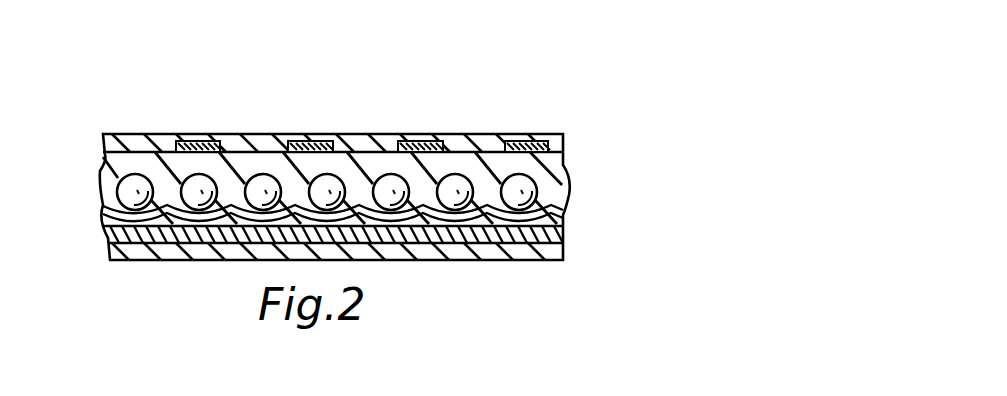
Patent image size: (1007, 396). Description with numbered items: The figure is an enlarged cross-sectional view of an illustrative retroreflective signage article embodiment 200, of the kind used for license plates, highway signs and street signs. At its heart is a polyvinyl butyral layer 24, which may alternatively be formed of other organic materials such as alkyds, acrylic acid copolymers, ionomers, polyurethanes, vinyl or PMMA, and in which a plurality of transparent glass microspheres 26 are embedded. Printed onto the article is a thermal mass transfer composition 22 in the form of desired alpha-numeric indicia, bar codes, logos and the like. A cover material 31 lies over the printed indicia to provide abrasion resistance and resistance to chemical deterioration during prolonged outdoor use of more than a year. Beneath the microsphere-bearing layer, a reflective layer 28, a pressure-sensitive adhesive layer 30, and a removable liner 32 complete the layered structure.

The retroreflective signage article embodiment 200 is at (533, 113).
The thermal mass transfer composition 22 is at (417, 136).
The polyvinyl butyral layer 24 is at (552, 167).
The transparent glass microspheres 26 is at (455, 180).
The reflective layer 28 is at (556, 196).
The pressure-sensitive adhesive layer 30 is at (108, 230).
The cover material 31 is at (128, 139).
The removable liner 32 is at (118, 260).